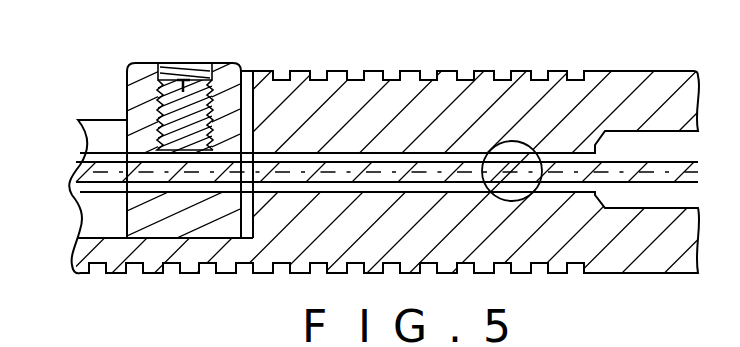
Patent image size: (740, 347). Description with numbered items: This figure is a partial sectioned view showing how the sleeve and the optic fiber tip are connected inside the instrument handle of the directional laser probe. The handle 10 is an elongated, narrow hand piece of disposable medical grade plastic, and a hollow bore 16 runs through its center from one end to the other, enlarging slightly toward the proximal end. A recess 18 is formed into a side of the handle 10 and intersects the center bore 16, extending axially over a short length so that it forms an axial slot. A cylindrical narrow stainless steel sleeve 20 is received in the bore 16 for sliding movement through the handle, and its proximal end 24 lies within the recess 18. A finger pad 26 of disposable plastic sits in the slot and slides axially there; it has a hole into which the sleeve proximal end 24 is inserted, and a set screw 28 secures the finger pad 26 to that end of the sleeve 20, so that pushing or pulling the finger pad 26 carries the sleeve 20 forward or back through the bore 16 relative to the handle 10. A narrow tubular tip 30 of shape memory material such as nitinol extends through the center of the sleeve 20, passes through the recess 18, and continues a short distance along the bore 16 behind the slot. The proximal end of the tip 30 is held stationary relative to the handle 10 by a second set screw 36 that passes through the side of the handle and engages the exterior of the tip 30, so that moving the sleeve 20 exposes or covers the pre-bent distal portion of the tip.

The handle 10 is at (625, 70).
The bore 16 is at (407, 152).
The recess 18 is at (91, 108).
The sleeve 20 is at (84, 203).
The proximal end of the sleeve 24 is at (266, 153).
The finger pad 26 is at (217, 62).
The set screw 28 is at (174, 77).
The tubular tip 30 is at (360, 153).
The set screw 36 is at (512, 141).